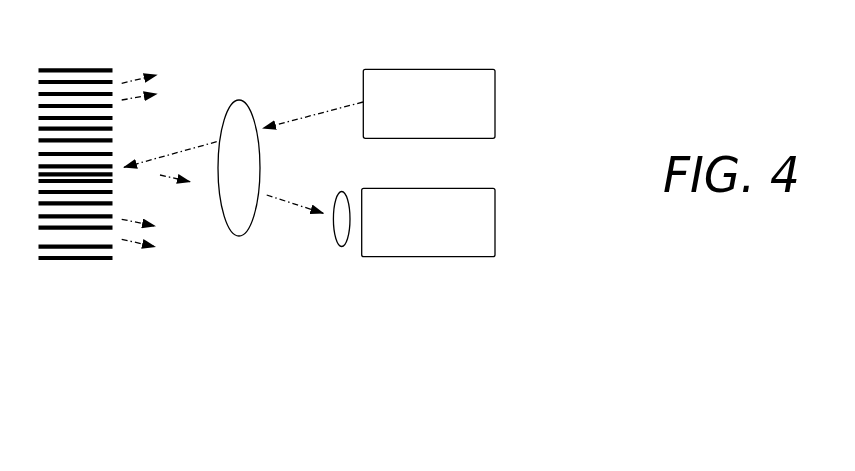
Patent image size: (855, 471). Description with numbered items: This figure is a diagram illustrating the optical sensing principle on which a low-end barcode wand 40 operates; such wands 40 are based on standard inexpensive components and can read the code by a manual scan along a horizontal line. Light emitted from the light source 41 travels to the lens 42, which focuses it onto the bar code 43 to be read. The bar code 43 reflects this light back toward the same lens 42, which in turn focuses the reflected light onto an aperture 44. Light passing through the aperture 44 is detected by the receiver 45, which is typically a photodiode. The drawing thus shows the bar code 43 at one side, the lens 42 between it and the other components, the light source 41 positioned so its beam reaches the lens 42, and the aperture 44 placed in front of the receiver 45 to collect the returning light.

The wand 40 is at (549, 138).
The light source 41 is at (497, 77).
The lens 42 is at (242, 100).
The bar code 43 is at (92, 69).
The aperture 44 is at (340, 247).
The receiver 45 is at (495, 207).